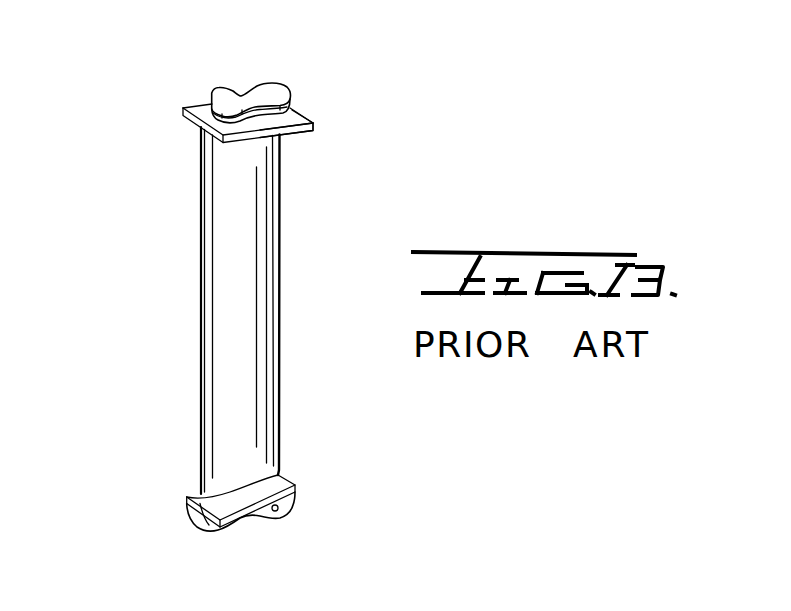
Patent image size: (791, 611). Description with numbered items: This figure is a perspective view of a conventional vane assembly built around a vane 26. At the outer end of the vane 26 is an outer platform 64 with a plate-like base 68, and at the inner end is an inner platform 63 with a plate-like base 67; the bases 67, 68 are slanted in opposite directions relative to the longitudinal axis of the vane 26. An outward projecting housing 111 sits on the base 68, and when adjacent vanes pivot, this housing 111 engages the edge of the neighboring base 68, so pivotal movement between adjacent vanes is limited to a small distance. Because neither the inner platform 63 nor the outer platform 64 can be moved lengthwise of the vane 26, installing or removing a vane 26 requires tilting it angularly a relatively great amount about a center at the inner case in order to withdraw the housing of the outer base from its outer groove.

The vane 26 is at (203, 282).
The outer platform 64 is at (197, 107).
The base 68 is at (305, 117).
The outward projecting housing 111 is at (234, 90).
The inner platform 63 is at (293, 483).
The base 67 is at (186, 495).